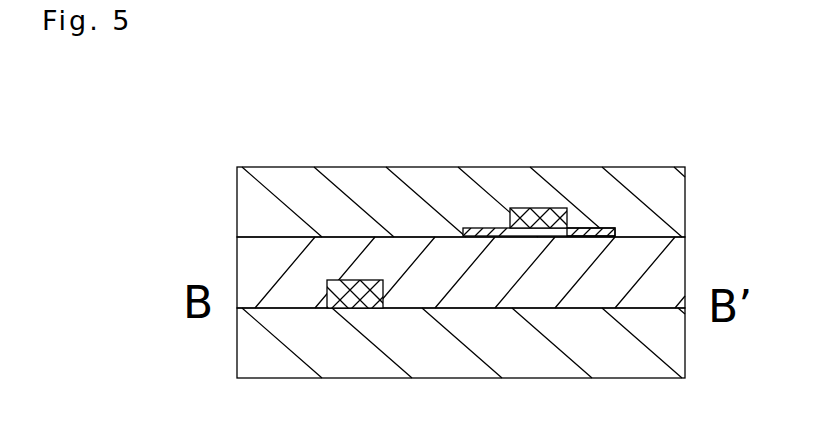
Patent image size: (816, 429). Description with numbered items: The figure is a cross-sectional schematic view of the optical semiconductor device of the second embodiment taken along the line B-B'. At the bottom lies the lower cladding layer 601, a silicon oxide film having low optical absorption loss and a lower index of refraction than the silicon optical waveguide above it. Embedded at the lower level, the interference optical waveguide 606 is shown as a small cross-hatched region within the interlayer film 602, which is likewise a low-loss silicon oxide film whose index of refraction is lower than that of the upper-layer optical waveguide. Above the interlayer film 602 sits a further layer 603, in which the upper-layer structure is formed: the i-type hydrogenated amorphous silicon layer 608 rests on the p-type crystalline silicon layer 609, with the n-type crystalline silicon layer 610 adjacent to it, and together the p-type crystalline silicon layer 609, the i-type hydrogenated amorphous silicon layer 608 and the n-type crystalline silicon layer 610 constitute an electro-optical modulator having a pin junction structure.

The lower cladding layer 601 is at (248, 358).
The interlayer film 602 is at (237, 252).
The upper insulating film 603 is at (270, 178).
The interference optical waveguide 606 is at (357, 308).
The i-type hydrogenated amorphous silicon layer 608 is at (537, 210).
The p-type crystalline silicon layer 609 is at (488, 228).
The n-type crystalline silicon layer 610 is at (588, 213).